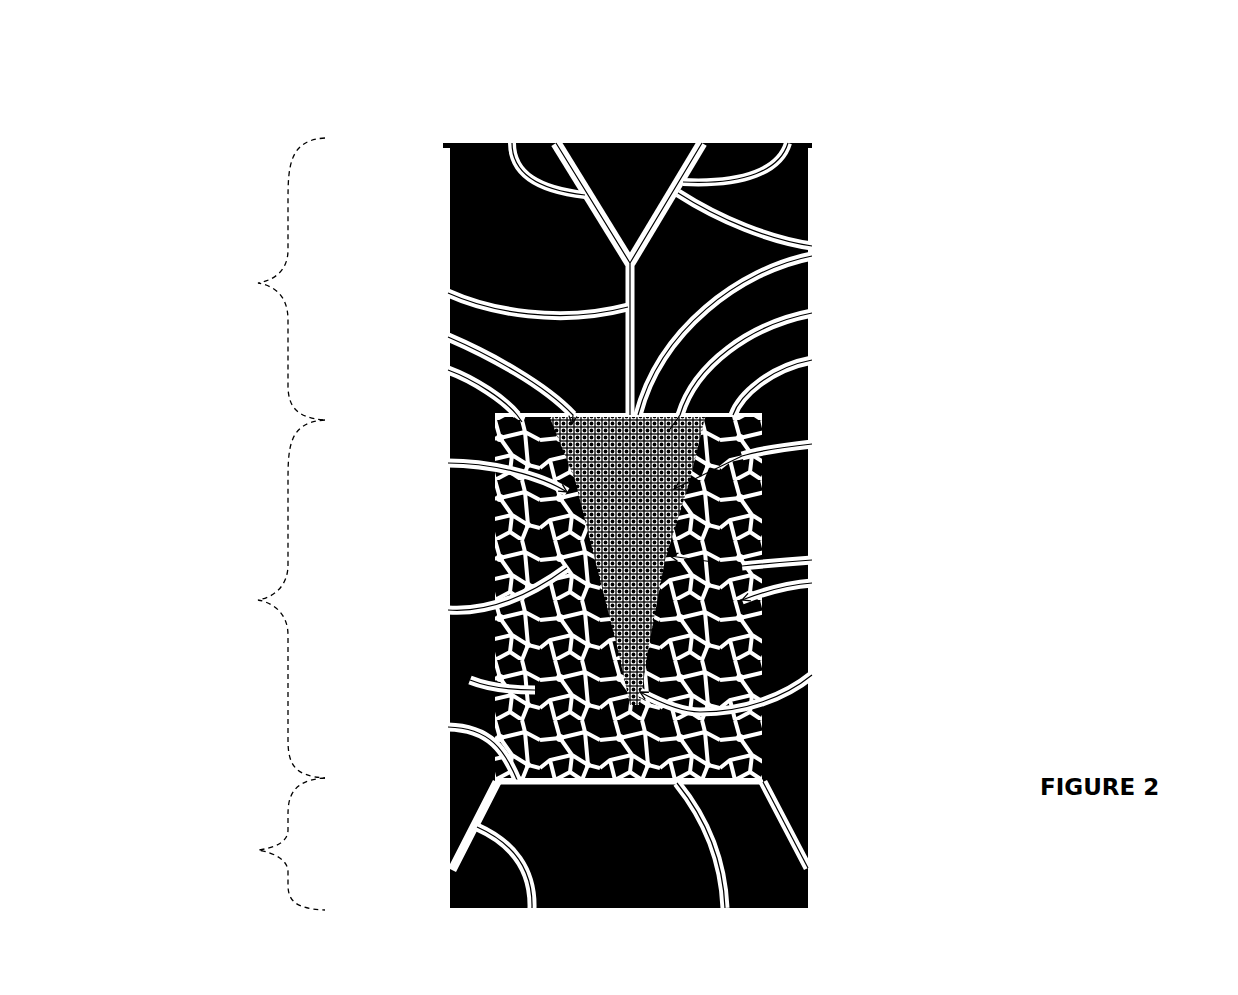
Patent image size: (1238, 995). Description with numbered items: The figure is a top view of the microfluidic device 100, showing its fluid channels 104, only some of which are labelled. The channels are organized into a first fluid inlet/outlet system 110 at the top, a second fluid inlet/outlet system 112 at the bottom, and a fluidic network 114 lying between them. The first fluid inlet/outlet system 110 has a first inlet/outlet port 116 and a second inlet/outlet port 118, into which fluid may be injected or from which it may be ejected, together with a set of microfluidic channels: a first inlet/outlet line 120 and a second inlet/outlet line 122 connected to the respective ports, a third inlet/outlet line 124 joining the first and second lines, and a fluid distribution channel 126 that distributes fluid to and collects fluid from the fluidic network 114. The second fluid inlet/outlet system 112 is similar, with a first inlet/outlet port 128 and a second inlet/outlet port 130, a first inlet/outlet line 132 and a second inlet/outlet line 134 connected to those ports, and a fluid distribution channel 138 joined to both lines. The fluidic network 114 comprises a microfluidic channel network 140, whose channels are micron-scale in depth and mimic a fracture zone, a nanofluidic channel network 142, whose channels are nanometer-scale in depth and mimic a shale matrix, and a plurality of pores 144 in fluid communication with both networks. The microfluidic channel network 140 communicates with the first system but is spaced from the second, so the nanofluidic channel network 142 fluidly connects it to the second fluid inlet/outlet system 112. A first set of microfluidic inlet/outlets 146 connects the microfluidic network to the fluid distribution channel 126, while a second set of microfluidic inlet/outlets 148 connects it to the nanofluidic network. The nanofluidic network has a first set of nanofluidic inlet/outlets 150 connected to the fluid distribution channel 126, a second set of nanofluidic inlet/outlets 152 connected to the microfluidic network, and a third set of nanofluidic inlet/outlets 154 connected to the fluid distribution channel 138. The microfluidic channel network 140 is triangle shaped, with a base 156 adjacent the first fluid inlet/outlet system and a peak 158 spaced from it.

The microfluidic device 100 is at (1044, 183).
The fluid channels 104 is at (807, 256).
The first fluid inlet/outlet system 110 is at (255, 283).
The second fluid inlet/outlet system 112 is at (258, 850).
The fluidic network 114 is at (258, 600).
The first inlet/outlet port 116 is at (553, 141).
The second inlet/outlet port 118 is at (701, 141).
The first inlet/outlet line 120 is at (512, 143).
The second inlet/outlet line 122 is at (788, 143).
The third inlet/outlet line 124 is at (452, 294).
The fluid distribution channel 126 is at (808, 355).
The first inlet/outlet port 128 is at (446, 881).
The second inlet/outlet port 130 is at (811, 880).
The first inlet/outlet line 132 is at (531, 908).
The second inlet/outlet line 134 is at (786, 830).
The fluid distribution channel 138 is at (725, 908).
The microfluidic channel network 140 is at (808, 445).
The nanofluidic channel network 142 is at (808, 583).
The pores 144 is at (470, 680).
The first set of microfluidic inlet/outlets 146 is at (804, 316).
The second set of microfluidic inlet/outlets 148 is at (808, 559).
The first set of nanofluidic inlet/outlets 150 is at (452, 371).
The second set of nanofluidic inlet/outlets 152 is at (452, 464).
The third set of nanofluidic inlet/outlets 154 is at (452, 728).
The base 156 is at (452, 339).
The peak 158 is at (808, 675).